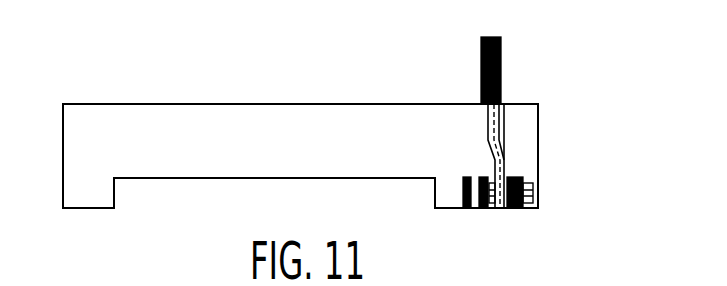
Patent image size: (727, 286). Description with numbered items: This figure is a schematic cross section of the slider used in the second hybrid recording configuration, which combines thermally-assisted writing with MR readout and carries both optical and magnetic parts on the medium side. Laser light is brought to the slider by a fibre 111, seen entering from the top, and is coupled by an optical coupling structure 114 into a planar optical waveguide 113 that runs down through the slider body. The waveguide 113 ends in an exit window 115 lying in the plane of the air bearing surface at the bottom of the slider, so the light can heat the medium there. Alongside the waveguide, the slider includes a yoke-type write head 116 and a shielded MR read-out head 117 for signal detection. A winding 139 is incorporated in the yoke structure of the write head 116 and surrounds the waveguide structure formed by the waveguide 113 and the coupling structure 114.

The fibre 111 is at (501, 48).
The planar optical waveguide 113 is at (504, 133).
The optical coupling structure 114 is at (504, 116).
The exit window 115 is at (502, 208).
The yoke-type write head 116 is at (513, 208).
The shielded MR read-out head 117 is at (481, 208).
The winding 139 is at (533, 185).